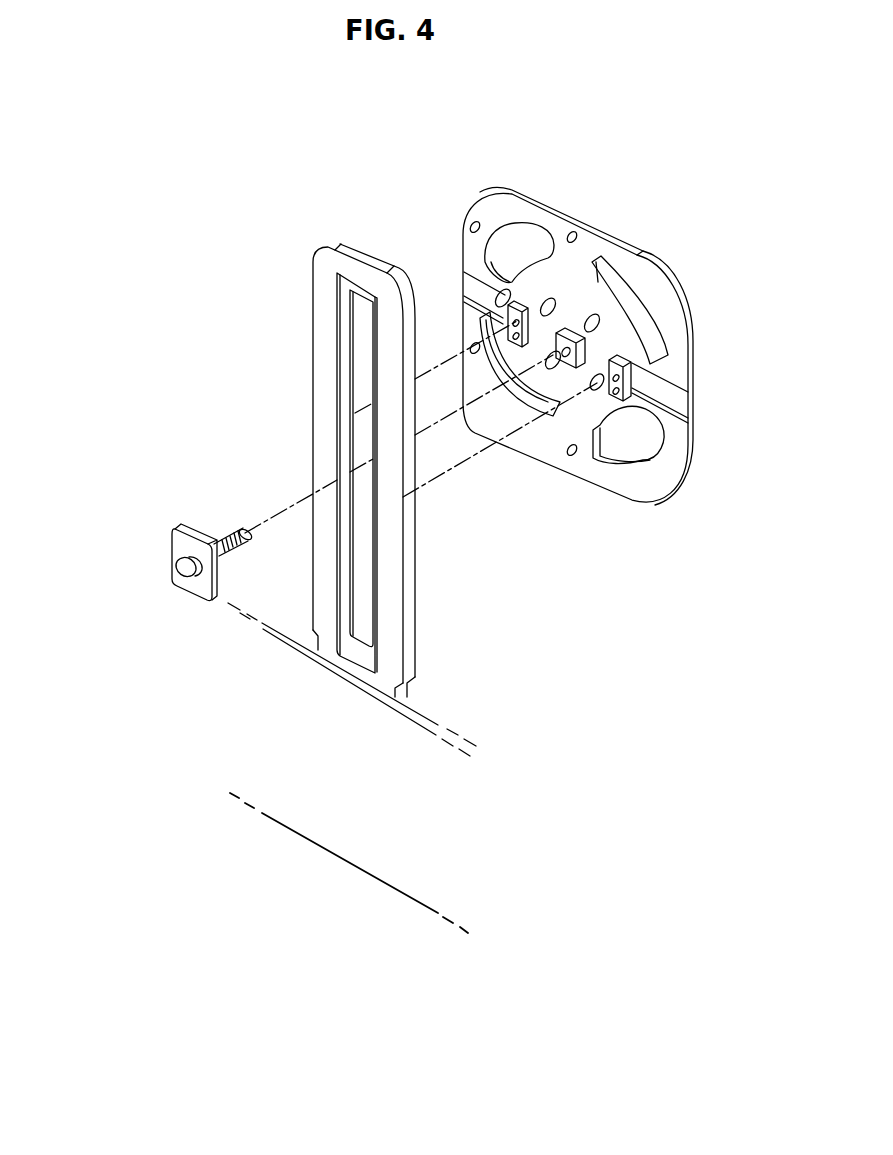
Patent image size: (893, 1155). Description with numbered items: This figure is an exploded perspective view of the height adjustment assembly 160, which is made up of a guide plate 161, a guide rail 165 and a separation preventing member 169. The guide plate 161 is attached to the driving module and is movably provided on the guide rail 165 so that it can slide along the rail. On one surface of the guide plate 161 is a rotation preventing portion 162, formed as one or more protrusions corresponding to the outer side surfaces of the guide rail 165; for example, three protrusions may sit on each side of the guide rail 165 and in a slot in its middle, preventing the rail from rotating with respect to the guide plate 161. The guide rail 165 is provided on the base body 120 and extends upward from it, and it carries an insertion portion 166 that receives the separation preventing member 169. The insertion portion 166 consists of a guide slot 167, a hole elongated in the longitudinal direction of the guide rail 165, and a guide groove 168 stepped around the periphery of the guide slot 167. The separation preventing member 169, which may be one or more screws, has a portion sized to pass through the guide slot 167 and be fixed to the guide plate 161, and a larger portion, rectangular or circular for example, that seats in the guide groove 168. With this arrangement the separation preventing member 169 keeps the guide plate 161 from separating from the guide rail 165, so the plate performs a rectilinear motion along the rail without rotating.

The height adjustment assembly 160 is at (311, 186).
The guide plate 161 is at (585, 247).
The rotation preventing portion 162 is at (612, 358).
The guide rail 165 is at (393, 588).
The insertion portion 166 is at (223, 275).
The guide slot 167 is at (368, 380).
The guide groove 168 is at (352, 300).
The separation preventing member 169 is at (180, 547).
The base body 120 is at (338, 835).